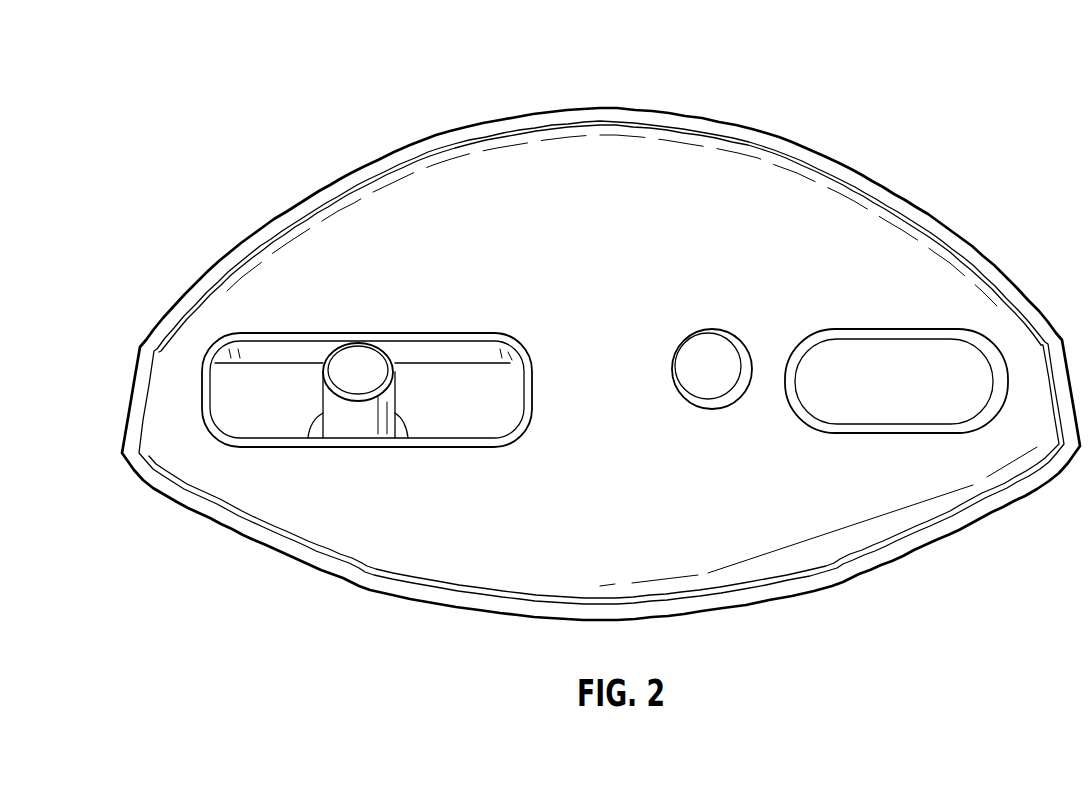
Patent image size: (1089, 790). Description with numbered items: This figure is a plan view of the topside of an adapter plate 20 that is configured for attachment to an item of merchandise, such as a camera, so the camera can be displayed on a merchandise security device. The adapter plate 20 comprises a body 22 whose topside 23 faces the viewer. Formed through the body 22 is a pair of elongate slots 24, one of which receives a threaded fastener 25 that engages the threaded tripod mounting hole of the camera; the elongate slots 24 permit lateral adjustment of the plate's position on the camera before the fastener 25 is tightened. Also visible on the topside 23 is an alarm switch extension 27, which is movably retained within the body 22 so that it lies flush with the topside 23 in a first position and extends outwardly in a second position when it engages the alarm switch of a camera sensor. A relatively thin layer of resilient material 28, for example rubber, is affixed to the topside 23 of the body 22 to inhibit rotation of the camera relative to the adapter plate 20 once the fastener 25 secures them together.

The adapter plate 20 is at (797, 112).
The body 22 is at (522, 621).
The topside 23 is at (832, 259).
The elongate slots 24 is at (264, 340).
The threaded fastener 25 is at (360, 342).
The alarm switch extension 27 is at (706, 357).
The resilient material layer 28 is at (888, 505).